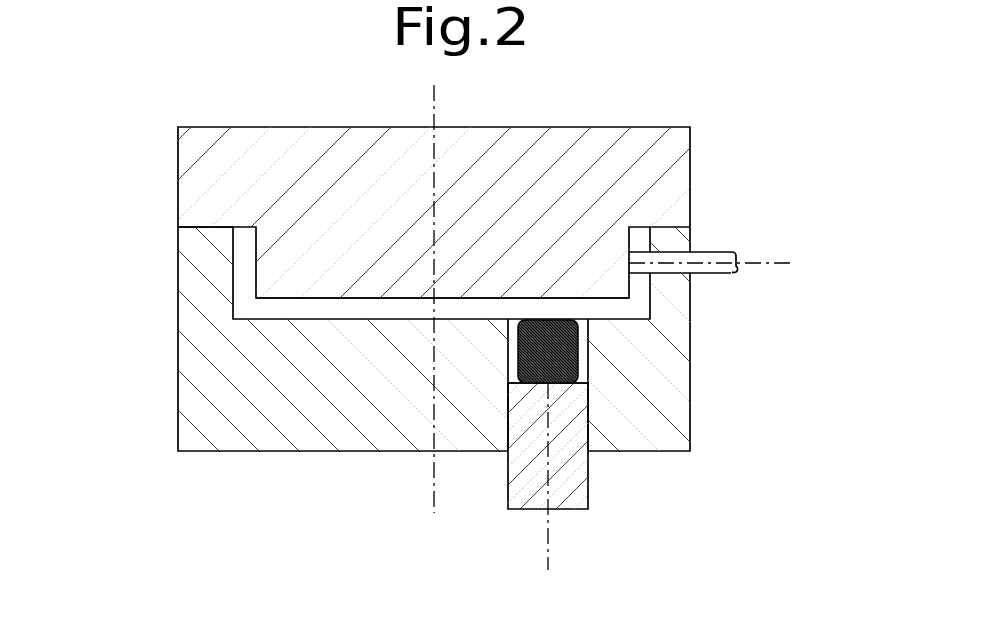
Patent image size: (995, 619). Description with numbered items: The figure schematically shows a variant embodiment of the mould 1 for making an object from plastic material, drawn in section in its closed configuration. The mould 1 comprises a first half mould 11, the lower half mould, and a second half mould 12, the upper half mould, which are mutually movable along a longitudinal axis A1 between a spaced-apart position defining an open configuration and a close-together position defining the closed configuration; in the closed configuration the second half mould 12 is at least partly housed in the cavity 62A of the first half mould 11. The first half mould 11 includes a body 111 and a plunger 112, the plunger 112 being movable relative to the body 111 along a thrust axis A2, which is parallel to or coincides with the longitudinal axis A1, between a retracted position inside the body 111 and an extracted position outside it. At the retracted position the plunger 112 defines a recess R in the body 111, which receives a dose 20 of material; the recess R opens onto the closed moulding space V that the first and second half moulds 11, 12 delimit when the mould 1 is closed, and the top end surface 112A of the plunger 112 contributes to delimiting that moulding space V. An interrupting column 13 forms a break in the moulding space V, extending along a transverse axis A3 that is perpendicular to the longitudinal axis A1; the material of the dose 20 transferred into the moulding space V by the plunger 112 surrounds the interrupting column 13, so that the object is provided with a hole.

The mould 1 is at (125, 185).
The first half mould 11 is at (449, 397).
The body 111 is at (657, 425).
The plunger 112 is at (538, 481).
The top end surface 112A is at (588, 382).
The second half mould 12 is at (414, 310).
The interrupting column 13 is at (710, 252).
The dose 20 is at (578, 353).
The recess R is at (582, 367).
The closed moulding space V is at (303, 308).
The cavity 62A is at (348, 312).
The longitudinal axis A1 is at (433, 499).
The thrust axis A2 is at (547, 552).
The transverse axis A3 is at (775, 263).